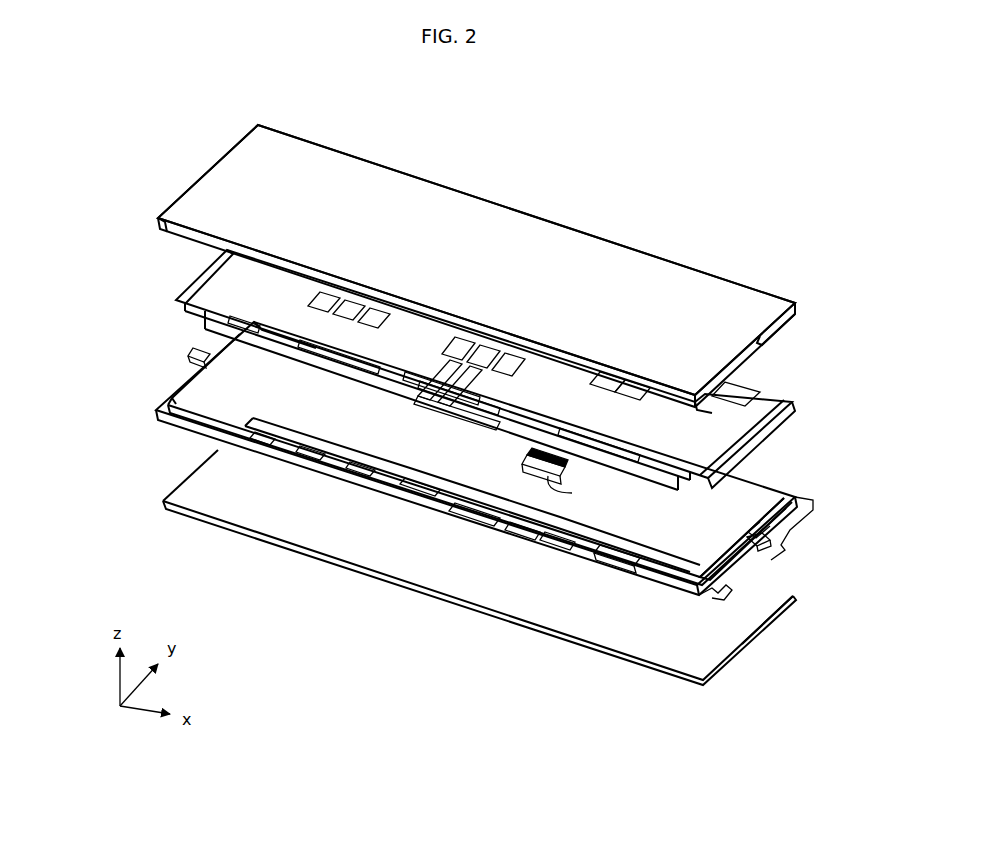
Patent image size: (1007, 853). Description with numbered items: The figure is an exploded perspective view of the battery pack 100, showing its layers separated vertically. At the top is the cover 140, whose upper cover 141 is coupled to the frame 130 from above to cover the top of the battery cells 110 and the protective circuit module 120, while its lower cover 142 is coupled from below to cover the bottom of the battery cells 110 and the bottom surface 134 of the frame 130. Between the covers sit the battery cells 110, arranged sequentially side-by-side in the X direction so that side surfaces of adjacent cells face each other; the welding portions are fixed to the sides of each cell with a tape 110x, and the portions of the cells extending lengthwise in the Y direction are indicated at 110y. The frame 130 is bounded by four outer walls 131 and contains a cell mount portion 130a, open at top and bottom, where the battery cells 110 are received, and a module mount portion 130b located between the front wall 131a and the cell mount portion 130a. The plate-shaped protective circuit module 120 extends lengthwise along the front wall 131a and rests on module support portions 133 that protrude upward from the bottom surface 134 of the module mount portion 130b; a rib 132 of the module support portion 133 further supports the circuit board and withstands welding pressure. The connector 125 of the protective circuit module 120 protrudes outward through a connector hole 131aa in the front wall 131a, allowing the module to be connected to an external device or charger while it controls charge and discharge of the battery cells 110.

The battery pack 100 is at (812, 181).
The battery cell 110 is at (565, 405).
The tape 110x is at (453, 413).
The y-direction portion of circuit board 110y is at (455, 352).
The protective circuit module 120 is at (465, 380).
The connector 125 is at (527, 465).
The frame 130 is at (806, 493).
The cell mount portion 130a is at (774, 547).
The module mount portion 130b is at (722, 589).
The outer wall 131 is at (777, 512).
The front wall 131a is at (475, 518).
The connector hole 131aa is at (553, 543).
The rib 132 is at (522, 538).
The module support portion 133 is at (360, 470).
The bottom surface 134 is at (617, 552).
The cover 140 is at (72, 311).
The upper cover 141 is at (177, 203).
The lower cover 142 is at (193, 490).